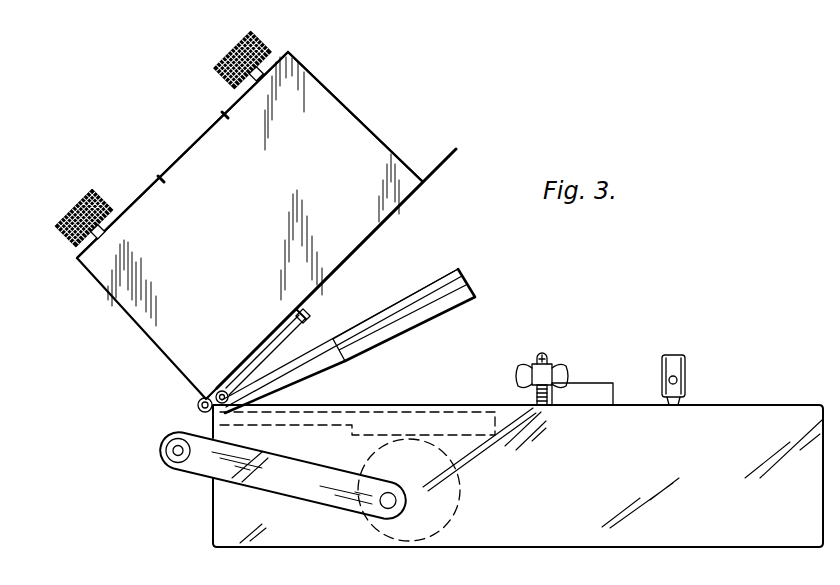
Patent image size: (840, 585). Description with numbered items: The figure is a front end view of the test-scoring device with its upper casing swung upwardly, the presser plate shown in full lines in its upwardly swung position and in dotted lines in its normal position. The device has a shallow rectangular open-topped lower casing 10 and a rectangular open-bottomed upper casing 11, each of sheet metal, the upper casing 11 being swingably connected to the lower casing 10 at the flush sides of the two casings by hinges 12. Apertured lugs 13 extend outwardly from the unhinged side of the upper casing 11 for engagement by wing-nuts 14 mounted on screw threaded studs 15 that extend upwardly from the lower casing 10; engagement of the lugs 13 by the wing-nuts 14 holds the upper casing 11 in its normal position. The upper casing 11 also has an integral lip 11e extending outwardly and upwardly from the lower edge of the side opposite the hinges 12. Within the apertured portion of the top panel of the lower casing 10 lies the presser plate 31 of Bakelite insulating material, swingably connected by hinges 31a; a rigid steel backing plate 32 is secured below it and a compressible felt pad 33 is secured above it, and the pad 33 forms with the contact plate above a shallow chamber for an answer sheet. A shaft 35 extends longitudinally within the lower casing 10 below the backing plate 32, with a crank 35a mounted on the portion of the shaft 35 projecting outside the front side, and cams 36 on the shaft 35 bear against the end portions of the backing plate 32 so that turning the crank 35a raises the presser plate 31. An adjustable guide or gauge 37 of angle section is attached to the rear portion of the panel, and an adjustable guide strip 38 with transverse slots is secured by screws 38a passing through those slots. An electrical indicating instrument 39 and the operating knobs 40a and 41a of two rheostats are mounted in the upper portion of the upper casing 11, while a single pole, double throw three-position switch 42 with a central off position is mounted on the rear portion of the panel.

The lower casing 10 is at (728, 535).
The upper casing 11 is at (177, 339).
The lip 11e is at (433, 165).
The hinges 12 is at (197, 405).
The lugs 13 is at (453, 151).
The wing-nuts 14 is at (553, 373).
The screw threaded studs 15 is at (536, 389).
The presser plate 31 is at (463, 283).
The hinges 31a is at (250, 371).
The backing plate 32 is at (477, 294).
The pad 33 is at (454, 276).
The shaft 35 is at (393, 504).
The crank 35a is at (293, 480).
The cams 36 is at (437, 507).
The adjustable guide or gauge 37 is at (584, 396).
The adjustable guide strip 38 is at (311, 311).
The screws 38a is at (309, 317).
The electrical indicating instrument 39 is at (183, 150).
The operating knob 40a is at (75, 204).
The operating knob 41a is at (236, 45).
The single pole, double throw three-position switch 42 is at (686, 372).